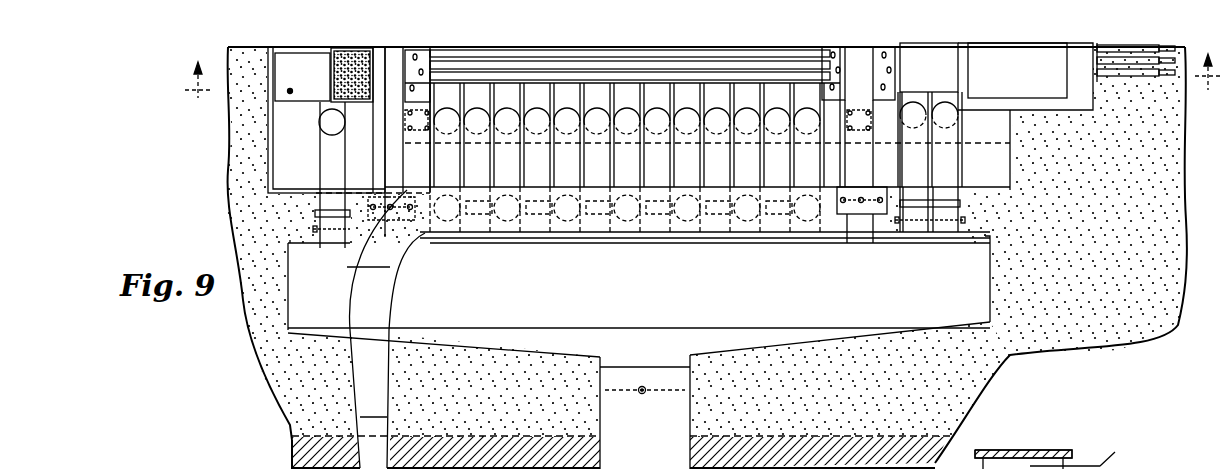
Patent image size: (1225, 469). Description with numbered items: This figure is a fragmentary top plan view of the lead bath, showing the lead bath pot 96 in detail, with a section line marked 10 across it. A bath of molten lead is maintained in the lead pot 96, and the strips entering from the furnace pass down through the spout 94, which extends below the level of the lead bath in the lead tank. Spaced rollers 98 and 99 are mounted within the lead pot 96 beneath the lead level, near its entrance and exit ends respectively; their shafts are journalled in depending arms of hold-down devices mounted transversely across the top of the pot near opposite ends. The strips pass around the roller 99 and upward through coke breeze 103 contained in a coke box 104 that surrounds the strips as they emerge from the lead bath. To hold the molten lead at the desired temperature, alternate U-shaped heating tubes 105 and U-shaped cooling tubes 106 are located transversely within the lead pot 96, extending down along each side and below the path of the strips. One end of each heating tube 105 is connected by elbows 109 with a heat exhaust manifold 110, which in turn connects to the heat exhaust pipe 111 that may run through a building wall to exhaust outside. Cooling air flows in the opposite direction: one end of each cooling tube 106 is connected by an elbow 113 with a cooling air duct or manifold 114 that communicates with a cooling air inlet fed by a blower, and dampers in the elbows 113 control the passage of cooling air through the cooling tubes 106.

The section line arrow 10 is at (703, 85).
The spout 94 is at (950, 82).
The lead bath pot 96 is at (268, 130).
The roller 98 is at (900, 90).
The roller 99 is at (412, 102).
The coke breeze 103 is at (330, 66).
The coke box 104 is at (330, 80).
The U-shaped heating tubes 105 is at (447, 175).
The U-shaped cooling tubes 106 is at (475, 175).
The elbows 109 is at (440, 137).
The heat exhaust manifold 110 is at (470, 240).
The heat exhaust pipe 111 is at (378, 388).
The elbow 113 is at (480, 135).
The cooling air duct or manifold 114 is at (540, 318).